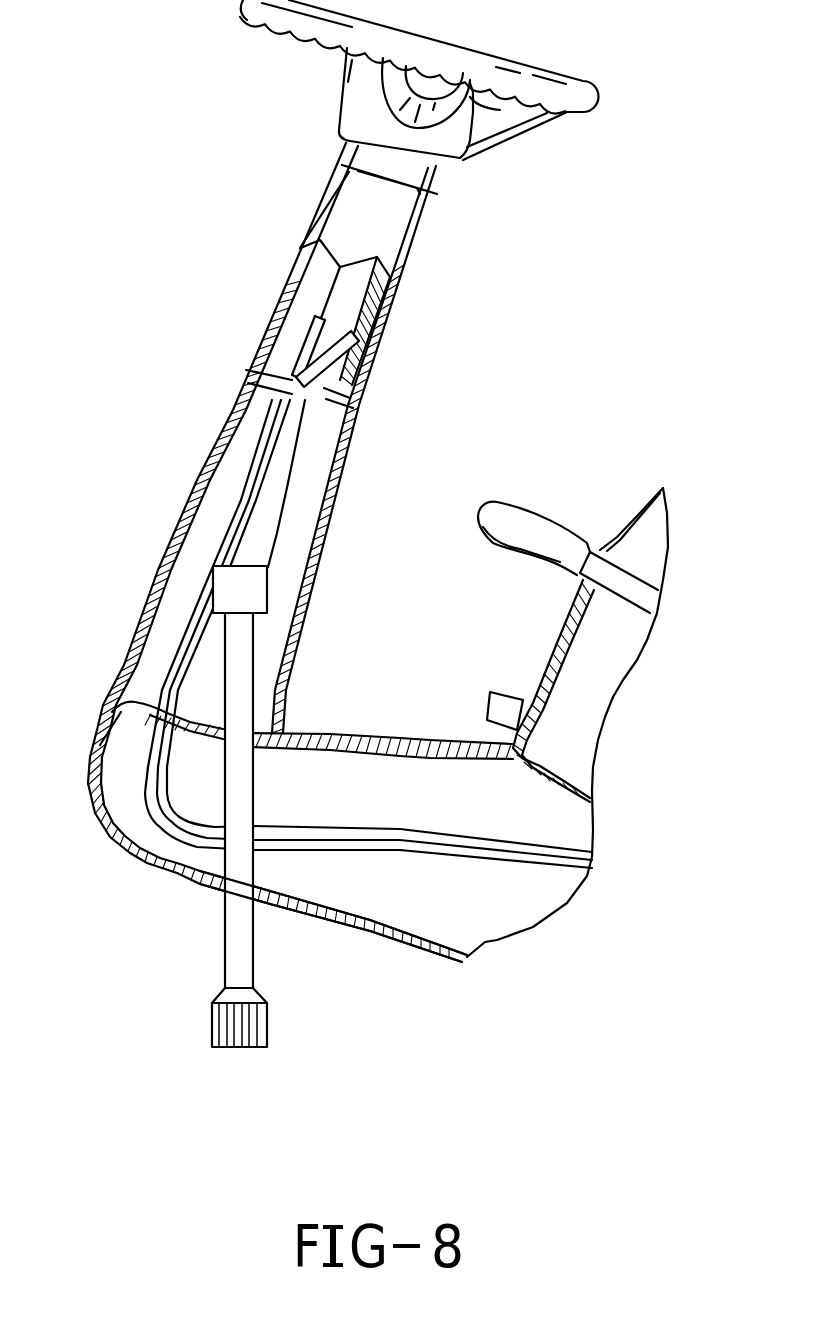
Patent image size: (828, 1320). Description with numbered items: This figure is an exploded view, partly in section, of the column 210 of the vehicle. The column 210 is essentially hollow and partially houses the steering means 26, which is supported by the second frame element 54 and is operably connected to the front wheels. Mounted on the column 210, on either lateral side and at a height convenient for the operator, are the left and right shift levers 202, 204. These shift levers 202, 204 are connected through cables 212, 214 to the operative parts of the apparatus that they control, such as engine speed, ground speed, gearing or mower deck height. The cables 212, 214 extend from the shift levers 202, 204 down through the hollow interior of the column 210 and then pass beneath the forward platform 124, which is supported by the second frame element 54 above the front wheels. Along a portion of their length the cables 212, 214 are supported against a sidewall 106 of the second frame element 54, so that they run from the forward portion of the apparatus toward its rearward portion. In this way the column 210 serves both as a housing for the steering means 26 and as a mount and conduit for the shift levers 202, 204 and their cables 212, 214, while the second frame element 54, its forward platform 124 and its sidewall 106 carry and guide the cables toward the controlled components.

The column 210 is at (333, 234).
The left shift lever 202 is at (307, 343).
The right shift lever 204 is at (301, 388).
The cable 212 is at (253, 472).
The cable 214 is at (240, 517).
The steering means 26 is at (233, 667).
The forward platform 124 is at (388, 740).
The sidewall 106 is at (549, 813).
The second frame element 54 is at (366, 897).